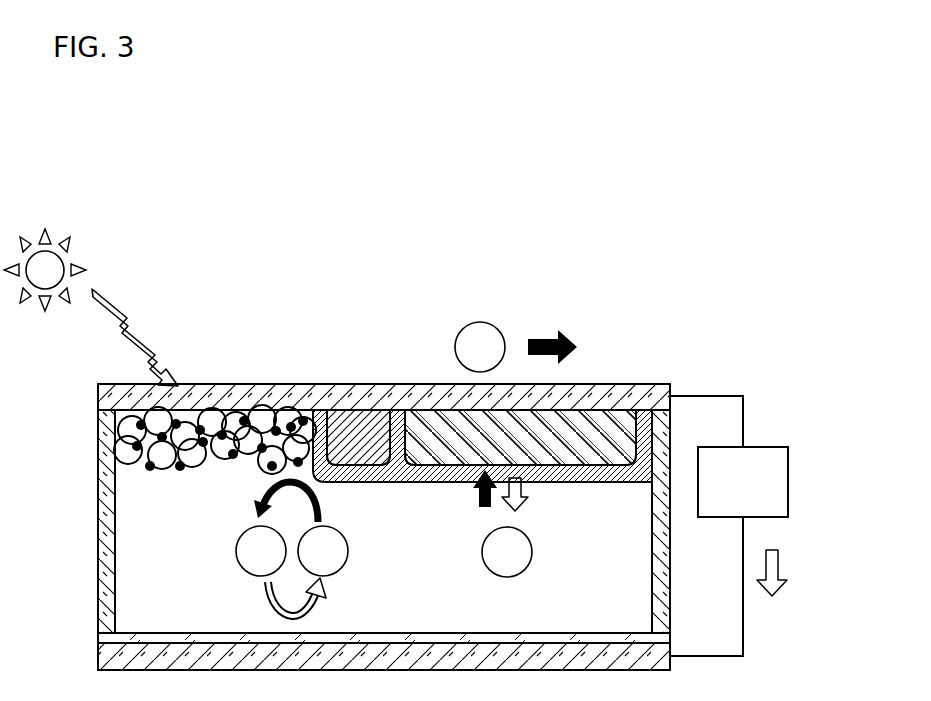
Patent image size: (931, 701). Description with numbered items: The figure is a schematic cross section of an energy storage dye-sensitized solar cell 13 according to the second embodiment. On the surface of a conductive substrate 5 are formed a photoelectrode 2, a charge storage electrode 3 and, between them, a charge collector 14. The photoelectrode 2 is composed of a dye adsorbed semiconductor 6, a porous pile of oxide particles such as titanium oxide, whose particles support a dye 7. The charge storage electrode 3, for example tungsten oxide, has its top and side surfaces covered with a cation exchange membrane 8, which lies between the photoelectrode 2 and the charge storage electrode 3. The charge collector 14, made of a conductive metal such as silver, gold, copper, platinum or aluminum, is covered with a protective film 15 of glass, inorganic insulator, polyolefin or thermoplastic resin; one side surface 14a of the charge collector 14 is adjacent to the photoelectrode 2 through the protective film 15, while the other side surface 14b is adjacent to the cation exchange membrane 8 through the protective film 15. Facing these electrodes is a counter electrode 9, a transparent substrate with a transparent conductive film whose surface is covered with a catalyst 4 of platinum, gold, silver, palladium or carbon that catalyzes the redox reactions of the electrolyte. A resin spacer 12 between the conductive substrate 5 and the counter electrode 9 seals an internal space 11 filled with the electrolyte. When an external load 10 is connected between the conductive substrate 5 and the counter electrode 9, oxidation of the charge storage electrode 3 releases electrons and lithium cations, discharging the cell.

The photoelectrode 2 is at (160, 487).
The charge storage electrode 3 is at (590, 474).
The catalyst 4 is at (98, 638).
The conductive substrate 5 is at (98, 394).
The dye adsorbed semiconductor 6 is at (150, 468).
The dye 7 is at (148, 478).
The cation exchange membrane 8 is at (667, 482).
The counter electrode 9 is at (98, 660).
The external load 10 is at (788, 482).
The internal space 11 is at (640, 601).
The spacer 12 is at (98, 578).
The energy storage dye-sensitized solar cell 13 is at (452, 208).
The charge collector 14 is at (368, 410).
The one side surface of the charge collector 14a is at (340, 418).
The other side surface of the charge collector 14b is at (397, 420).
The protective film 15 is at (318, 408).